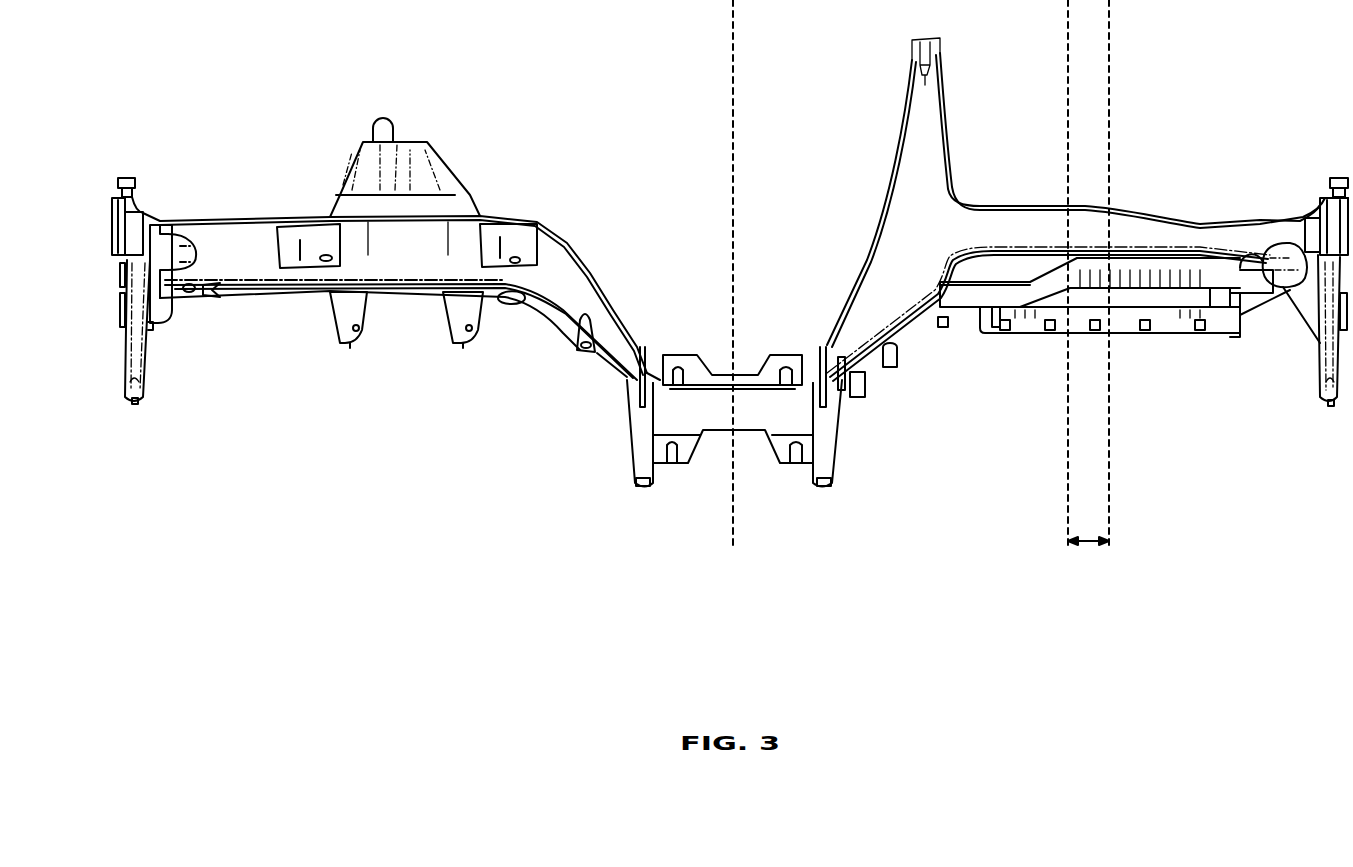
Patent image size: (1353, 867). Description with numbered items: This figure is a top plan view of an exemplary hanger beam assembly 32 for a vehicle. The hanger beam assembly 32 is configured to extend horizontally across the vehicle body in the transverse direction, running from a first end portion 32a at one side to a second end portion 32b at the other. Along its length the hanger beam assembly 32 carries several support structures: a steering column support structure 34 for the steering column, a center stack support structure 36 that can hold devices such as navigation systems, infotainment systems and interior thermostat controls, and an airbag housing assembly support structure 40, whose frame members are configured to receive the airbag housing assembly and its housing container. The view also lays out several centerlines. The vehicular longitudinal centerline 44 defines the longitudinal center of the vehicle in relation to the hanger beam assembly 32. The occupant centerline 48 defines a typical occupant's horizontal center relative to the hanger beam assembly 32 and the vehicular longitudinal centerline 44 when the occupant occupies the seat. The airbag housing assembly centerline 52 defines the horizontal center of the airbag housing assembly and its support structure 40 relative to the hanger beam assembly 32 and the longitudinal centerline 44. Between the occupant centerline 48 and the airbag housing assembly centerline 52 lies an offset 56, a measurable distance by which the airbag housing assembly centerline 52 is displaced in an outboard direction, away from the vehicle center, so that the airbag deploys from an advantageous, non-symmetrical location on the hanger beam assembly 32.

The hanger beam assembly 32 is at (222, 215).
The first end portion 32a is at (135, 406).
The second end portion 32b is at (1331, 406).
The steering column support structure 34 is at (406, 300).
The center stack support structure 36 is at (785, 363).
The airbag housing assembly support structure 40 is at (1175, 336).
The vehicular longitudinal centerline 44 is at (737, 527).
The occupant centerline 48 is at (1066, 470).
The airbag housing assembly centerline 52 is at (1110, 518).
The offset 56 is at (1087, 544).